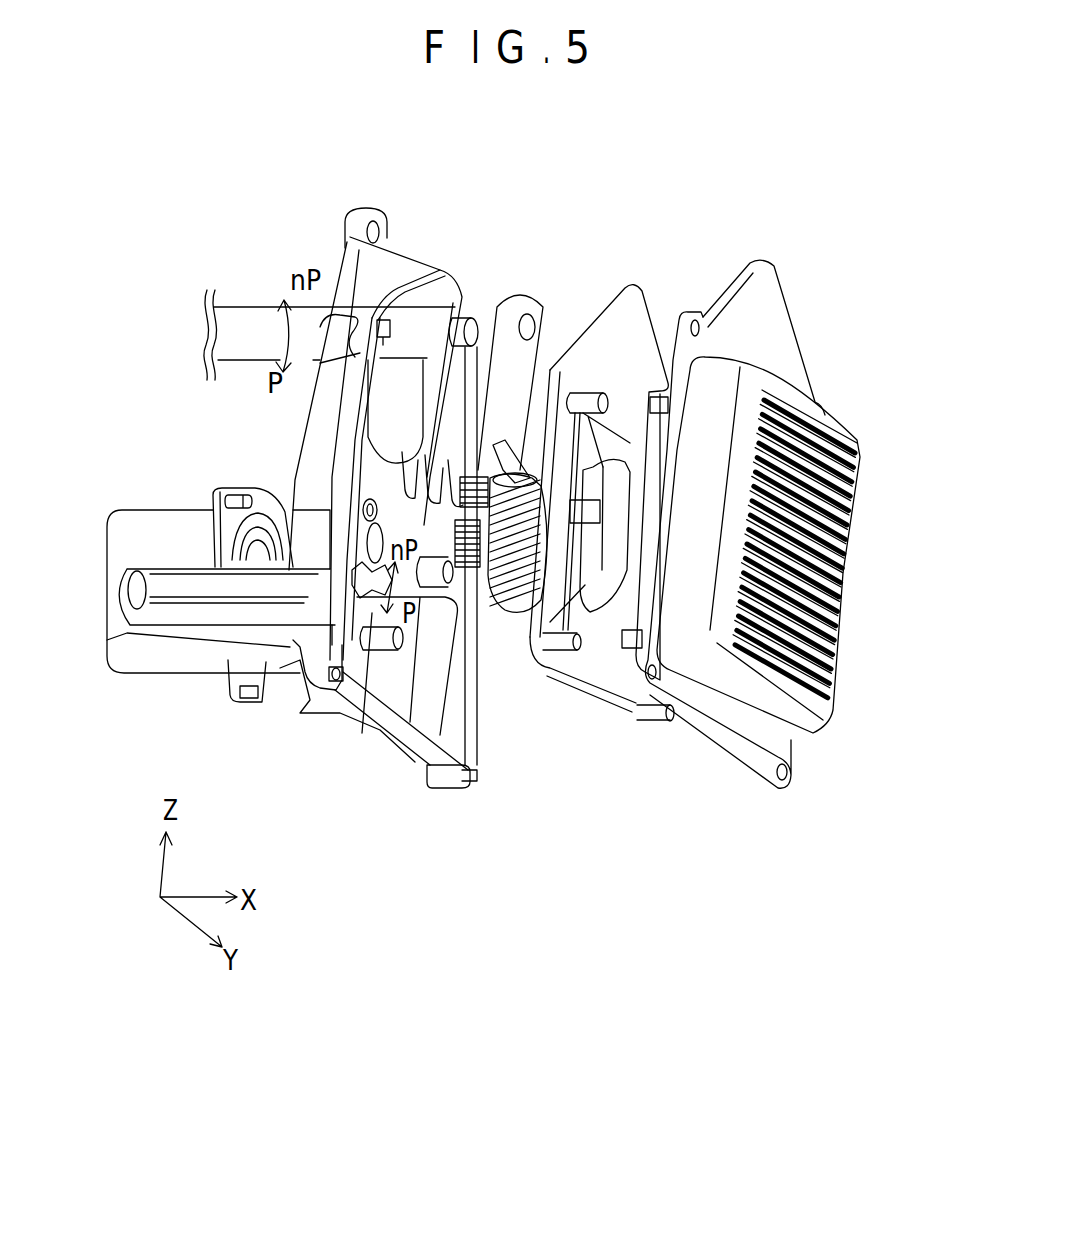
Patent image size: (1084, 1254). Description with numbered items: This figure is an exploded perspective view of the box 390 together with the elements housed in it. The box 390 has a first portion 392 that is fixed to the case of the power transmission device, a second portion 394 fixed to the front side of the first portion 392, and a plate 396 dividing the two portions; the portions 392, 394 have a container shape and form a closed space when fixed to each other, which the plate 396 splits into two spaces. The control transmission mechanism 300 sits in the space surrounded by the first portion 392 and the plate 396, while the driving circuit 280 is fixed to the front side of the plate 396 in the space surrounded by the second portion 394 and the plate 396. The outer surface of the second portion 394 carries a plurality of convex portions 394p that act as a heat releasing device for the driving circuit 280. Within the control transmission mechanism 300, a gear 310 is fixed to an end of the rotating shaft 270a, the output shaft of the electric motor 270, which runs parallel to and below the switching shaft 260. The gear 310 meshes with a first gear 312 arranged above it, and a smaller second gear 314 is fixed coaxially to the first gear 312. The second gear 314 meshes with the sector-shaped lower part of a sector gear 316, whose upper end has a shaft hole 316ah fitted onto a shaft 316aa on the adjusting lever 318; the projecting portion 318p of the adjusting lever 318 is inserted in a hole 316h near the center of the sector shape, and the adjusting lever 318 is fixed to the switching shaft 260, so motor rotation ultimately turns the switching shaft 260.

The switching shaft 260 is at (260, 322).
The electric motor 270 is at (185, 660).
The rotating shaft 270a is at (317, 690).
The driving circuit 280 is at (625, 712).
The control transmission mechanism 300 is at (595, 181).
The gear 310 is at (425, 755).
The first gear 312 is at (520, 645).
The second gear 314 is at (488, 650).
The sector gear 316 is at (562, 336).
The shaft 316aa is at (462, 318).
The shaft hole 316ah is at (530, 322).
The hole 316h is at (517, 462).
The adjusting lever 318 is at (466, 288).
The projecting portion 318p is at (423, 520).
The box 390 is at (678, 672).
The first portion 392 is at (442, 782).
The second portion 394 is at (793, 692).
The convex portions 394p is at (838, 520).
The plate 396 is at (590, 760).